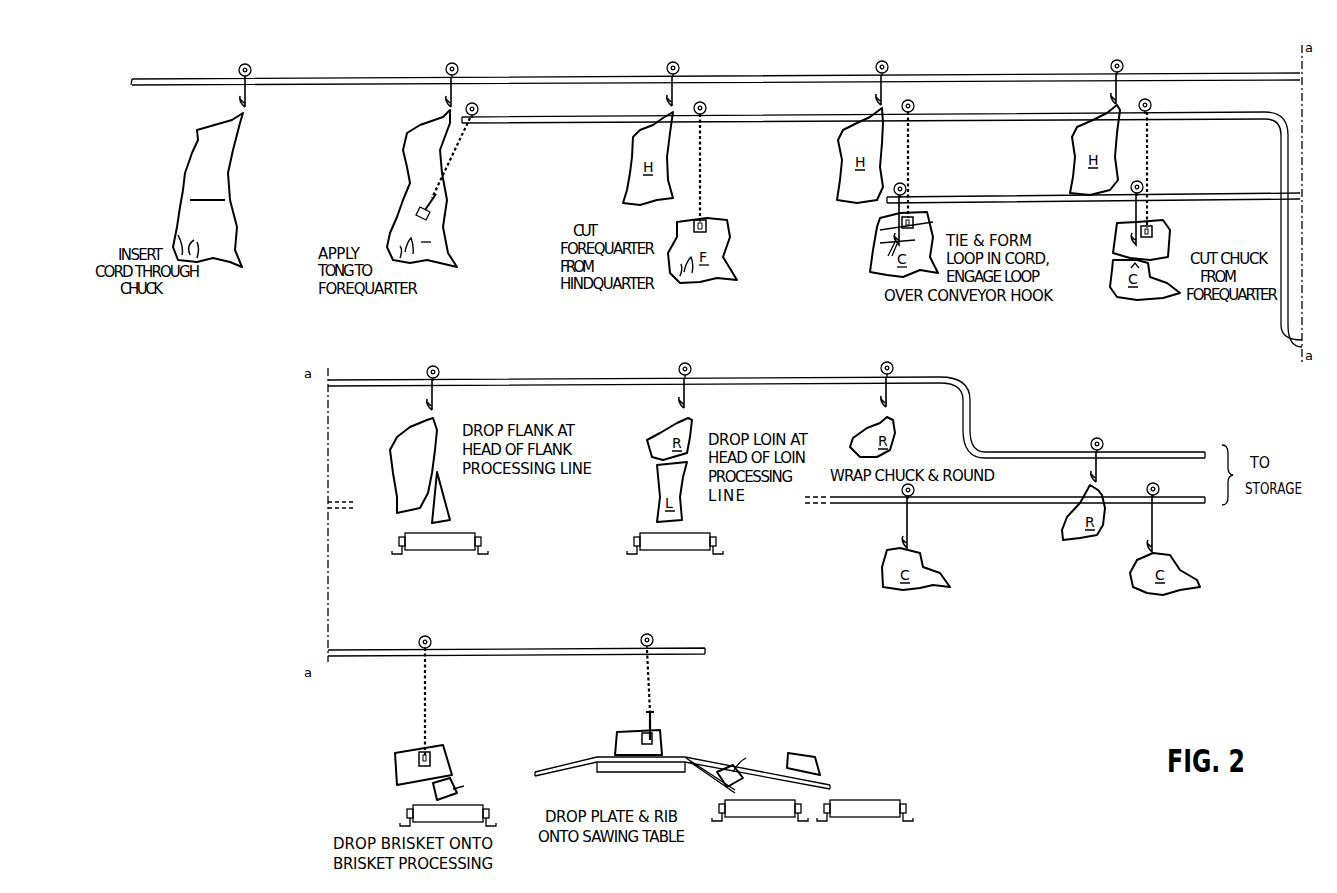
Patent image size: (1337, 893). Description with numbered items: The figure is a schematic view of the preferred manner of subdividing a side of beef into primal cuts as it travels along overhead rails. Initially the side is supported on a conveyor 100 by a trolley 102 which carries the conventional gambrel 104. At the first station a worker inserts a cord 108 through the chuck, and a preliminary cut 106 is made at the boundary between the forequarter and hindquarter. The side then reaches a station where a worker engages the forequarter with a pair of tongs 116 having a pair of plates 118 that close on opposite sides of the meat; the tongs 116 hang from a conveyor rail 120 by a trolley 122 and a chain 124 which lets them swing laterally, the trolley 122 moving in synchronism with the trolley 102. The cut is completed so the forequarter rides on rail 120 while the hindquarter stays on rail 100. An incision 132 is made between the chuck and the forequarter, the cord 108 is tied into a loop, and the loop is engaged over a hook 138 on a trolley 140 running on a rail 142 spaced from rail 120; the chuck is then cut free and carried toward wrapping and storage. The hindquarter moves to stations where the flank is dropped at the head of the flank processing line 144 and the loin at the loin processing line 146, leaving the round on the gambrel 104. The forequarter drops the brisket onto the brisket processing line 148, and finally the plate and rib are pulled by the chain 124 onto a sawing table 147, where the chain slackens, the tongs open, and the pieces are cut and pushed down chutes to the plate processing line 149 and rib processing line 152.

The conveyor rail 100 is at (301, 80).
The trolley 102 is at (250, 66).
The gambrel 104 is at (249, 102).
The preliminary cut 106 is at (442, 205).
The cord 108 is at (179, 234).
The tongs 116 is at (430, 198).
The plates 118 is at (432, 214).
The conveyor rail 120 is at (526, 117).
The trolley 122 is at (477, 106).
The chain 124 is at (463, 154).
The incision 132 is at (884, 248).
The hook 138 is at (905, 233).
The trolley 140 is at (906, 186).
The rail 142 is at (969, 197).
The flank processing line 144 is at (460, 557).
The loin processing line 146 is at (694, 548).
The sawing table 147 is at (575, 760).
The brisket processing line 148 is at (485, 805).
The plate processing line 149 is at (773, 818).
The rib processing line 152 is at (868, 818).